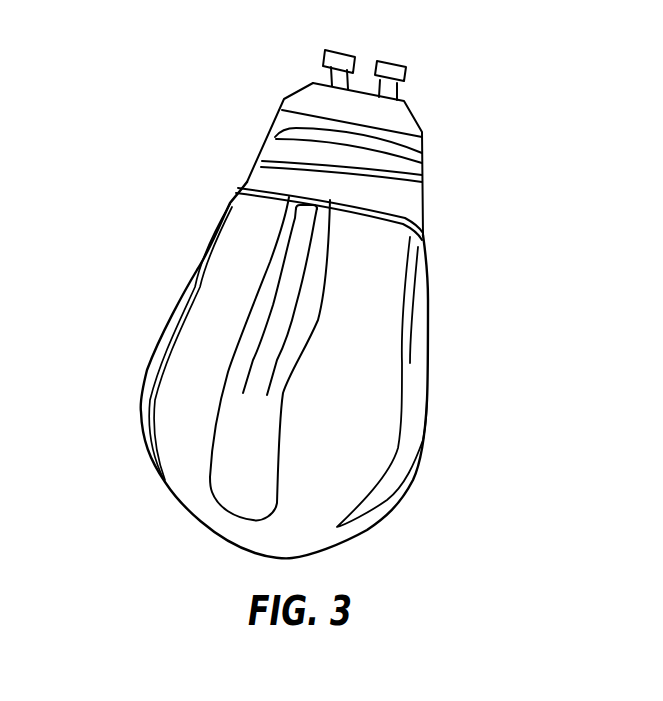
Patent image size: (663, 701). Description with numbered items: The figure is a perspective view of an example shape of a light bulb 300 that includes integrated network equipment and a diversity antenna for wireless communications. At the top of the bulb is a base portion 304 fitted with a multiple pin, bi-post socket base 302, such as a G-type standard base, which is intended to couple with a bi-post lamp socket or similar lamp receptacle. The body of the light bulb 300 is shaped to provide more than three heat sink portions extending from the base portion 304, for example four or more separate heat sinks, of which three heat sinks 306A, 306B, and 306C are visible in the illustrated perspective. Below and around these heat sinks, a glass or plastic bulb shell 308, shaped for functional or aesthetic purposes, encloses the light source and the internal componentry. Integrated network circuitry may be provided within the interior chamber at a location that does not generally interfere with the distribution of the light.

The light bulb 300 is at (162, 68).
The bi-post socket base 302 is at (407, 71).
The base portion 304 is at (272, 131).
The heat sink 306A is at (165, 326).
The heat sink 306B is at (218, 500).
The heat sink 306C is at (412, 437).
The bulb shell 308 is at (333, 547).